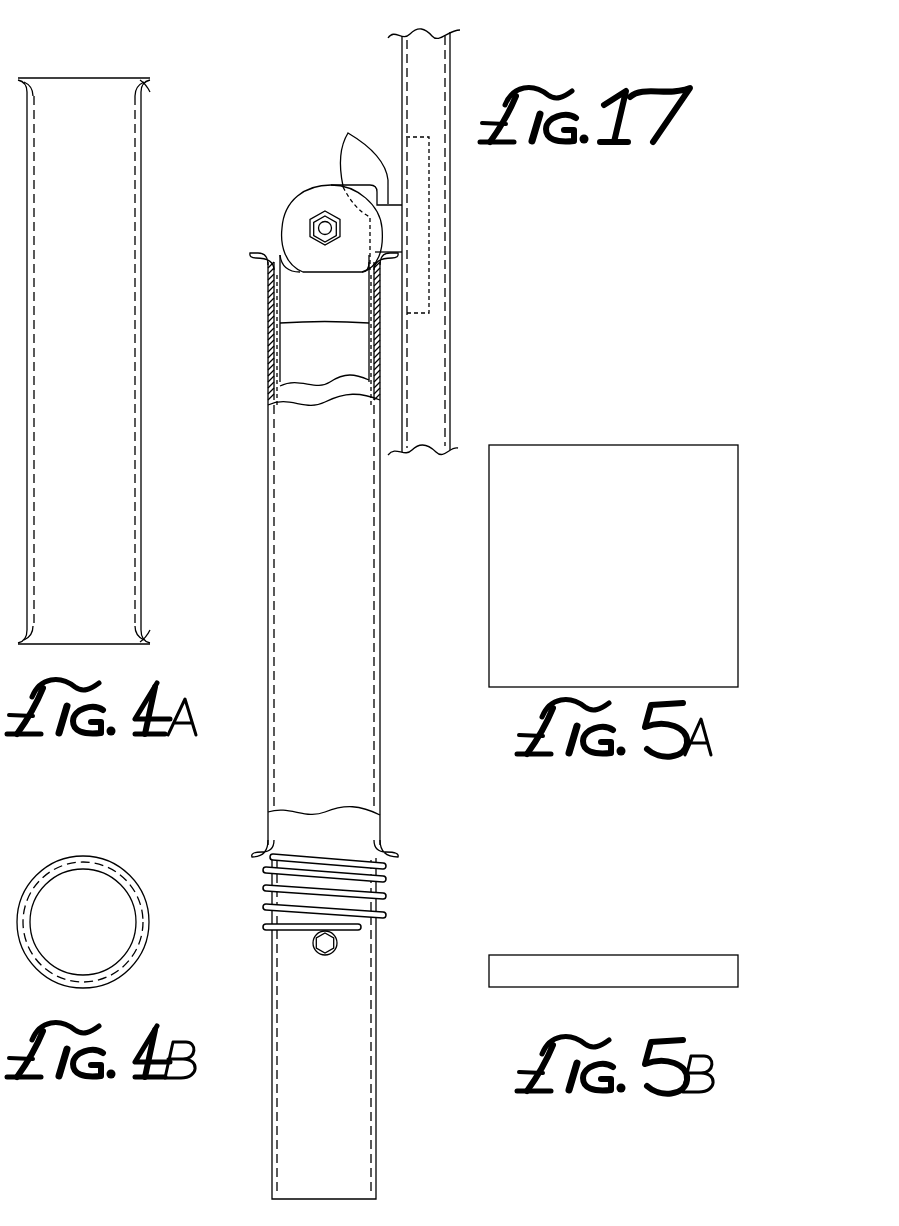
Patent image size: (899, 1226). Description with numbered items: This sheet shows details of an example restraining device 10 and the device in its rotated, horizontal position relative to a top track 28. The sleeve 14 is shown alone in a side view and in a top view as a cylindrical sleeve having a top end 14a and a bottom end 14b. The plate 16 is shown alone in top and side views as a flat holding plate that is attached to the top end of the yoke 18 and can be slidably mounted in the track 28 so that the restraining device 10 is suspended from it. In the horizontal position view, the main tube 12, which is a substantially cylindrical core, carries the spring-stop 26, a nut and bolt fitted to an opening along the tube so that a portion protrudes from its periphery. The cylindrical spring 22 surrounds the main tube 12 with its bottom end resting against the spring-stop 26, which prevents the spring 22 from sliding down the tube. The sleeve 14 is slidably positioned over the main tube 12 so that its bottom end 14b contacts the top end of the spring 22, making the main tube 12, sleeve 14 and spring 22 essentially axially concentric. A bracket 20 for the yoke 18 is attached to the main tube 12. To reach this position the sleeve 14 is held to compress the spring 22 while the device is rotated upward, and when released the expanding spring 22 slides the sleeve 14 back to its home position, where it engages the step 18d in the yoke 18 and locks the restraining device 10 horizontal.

In FIG. 17, the restraining device 10 is at (334, 614).
In FIG. 17, the main tube 12 is at (270, 1033).
In FIG. 4A, the sleeve 14 is at (168, 472).
In FIG. 4B, the sleeve 14 is at (150, 952).
In FIG. 17, the sleeve 14 is at (268, 652).
In FIG. 4A, the top end of the sleeve 14a is at (147, 84).
In FIG. 17, the top end of the sleeve 14a is at (262, 255).
In FIG. 4A, the bottom end of the sleeve 14b is at (148, 634).
In FIG. 17, the bottom end of the sleeve 14b is at (262, 853).
In FIG. 5A, the plate 16 is at (748, 563).
In FIG. 5B, the plate 16 is at (750, 955).
In FIG. 17, the plate 16 is at (415, 134).
In FIG. 17, the yoke 18 is at (297, 219).
In FIG. 17, the step 18d is at (346, 158).
In FIG. 17, the bracket 20 is at (288, 317).
In FIG. 17, the spring 22 is at (388, 915).
In FIG. 17, the spring-stop 26 is at (309, 947).
In FIG. 17, the track 28 is at (453, 327).